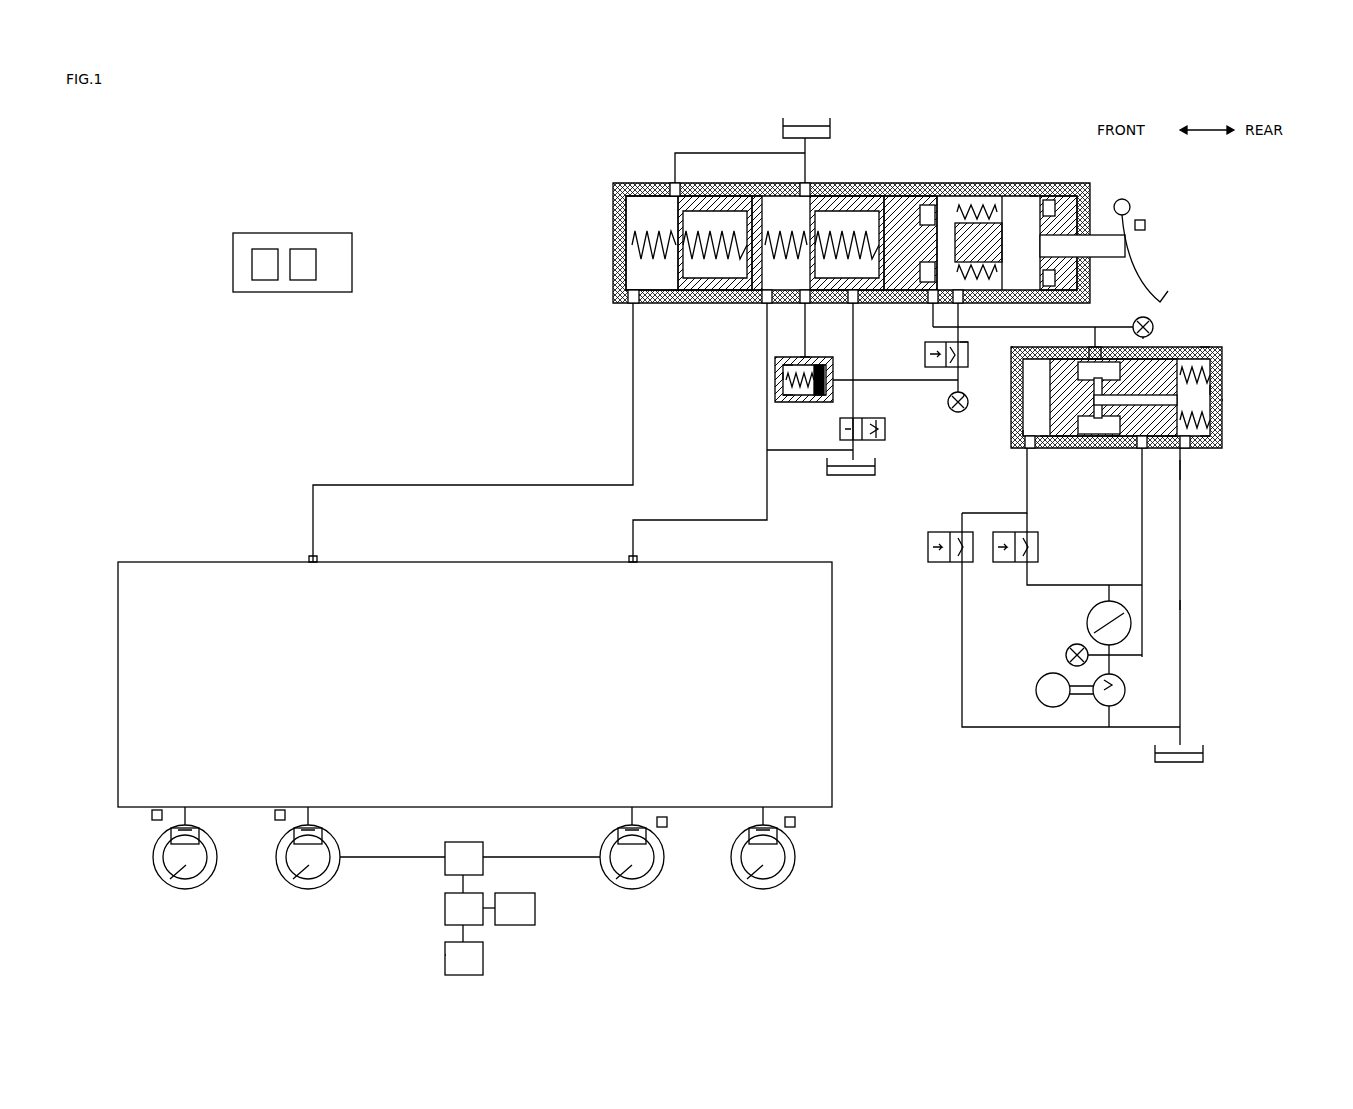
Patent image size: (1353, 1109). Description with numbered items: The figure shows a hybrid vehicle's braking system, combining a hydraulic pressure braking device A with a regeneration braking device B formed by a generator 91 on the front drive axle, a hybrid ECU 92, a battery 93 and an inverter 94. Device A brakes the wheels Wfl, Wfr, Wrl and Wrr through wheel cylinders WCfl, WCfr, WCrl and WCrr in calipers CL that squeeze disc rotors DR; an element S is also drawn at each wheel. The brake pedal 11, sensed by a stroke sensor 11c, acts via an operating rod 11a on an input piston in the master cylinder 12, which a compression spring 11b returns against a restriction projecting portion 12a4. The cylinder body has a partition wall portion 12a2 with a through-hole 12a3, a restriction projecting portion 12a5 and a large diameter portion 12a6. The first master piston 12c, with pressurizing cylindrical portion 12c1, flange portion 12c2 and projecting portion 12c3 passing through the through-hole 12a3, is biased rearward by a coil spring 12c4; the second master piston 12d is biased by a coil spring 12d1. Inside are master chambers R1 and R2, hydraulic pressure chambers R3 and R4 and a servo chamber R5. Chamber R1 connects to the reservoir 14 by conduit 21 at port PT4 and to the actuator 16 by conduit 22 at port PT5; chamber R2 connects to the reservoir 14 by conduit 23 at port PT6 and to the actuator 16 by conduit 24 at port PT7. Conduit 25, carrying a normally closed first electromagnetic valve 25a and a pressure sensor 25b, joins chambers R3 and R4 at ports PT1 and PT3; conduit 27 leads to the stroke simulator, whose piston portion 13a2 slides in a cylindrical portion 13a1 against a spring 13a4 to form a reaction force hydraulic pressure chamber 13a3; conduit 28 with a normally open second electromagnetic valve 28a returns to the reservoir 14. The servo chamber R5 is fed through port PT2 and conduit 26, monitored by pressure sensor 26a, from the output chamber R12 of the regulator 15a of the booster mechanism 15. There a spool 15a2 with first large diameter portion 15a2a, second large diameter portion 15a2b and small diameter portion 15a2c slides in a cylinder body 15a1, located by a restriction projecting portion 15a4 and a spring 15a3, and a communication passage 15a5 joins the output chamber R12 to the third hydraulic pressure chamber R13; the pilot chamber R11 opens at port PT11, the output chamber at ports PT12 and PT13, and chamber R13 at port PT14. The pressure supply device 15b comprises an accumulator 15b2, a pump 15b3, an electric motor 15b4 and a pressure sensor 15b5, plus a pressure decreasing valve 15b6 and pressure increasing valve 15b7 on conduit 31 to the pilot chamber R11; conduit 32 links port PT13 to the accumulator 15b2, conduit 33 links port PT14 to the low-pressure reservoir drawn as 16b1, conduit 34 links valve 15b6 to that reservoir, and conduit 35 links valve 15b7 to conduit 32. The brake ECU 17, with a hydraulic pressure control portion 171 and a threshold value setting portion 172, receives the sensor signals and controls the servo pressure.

The vehicle brake device A is at (439, 137).
The brake ECU / controller B is at (355, 924).
The brake pedal 11 is at (1137, 275).
The operating rod 11a is at (1130, 246).
The operating rod end 11b is at (979, 183).
The pedal stroke sensor 11c is at (1146, 226).
The master cylinder 12 is at (613, 202).
The partition wall 12a2 is at (941, 183).
The spring 12a3 is at (956, 183).
The input piston 12a4 is at (1078, 181).
The cylinder portion 12a5 is at (928, 183).
The cylinder portion 12a6 is at (872, 176).
The second master piston 12c is at (820, 303).
The piston body 12c1 is at (836, 183).
The piston portion 12c2 is at (912, 183).
The piston portion 12c3 is at (1004, 183).
The pressure port 12c4 is at (802, 357).
The first master piston 12d is at (712, 303).
The piston skirt 12d1 is at (700, 290).
The valve spring 13a1 is at (800, 386).
The valve body 13a2 is at (790, 400).
The valve housing 13a3 is at (778, 361).
The valve port 13a4 is at (786, 378).
The reservoir 14 is at (783, 128).
The servo pressure generating device 15 is at (1279, 527).
The regulator 15a is at (1223, 405).
The regulator piston 15a1 is at (1223, 421).
The regulator spring 15a2 is at (1223, 374).
The spring portion 15a2a is at (1171, 450).
The spring portion 15a2b is at (1062, 449).
The spring portion 15a2c is at (1112, 449).
The regulator housing 15a3 is at (1211, 349).
The regulator chamber 15a4 is at (1037, 449).
The regulator chamber 15a5 is at (1223, 393).
The pressure supply device 15b is at (1209, 608).
The accumulator 15b2 is at (1087, 623).
The pump 15b3 is at (1140, 681).
The motor 15b4 is at (1036, 690).
The check valve 15b5 is at (1066, 655).
The pressure reducing valve 15b6 is at (950, 562).
The pressure increasing valve 15b7 is at (1013, 562).
The actuator 16 is at (746, 562).
The reservoir 16b1 is at (1204, 753).
The brake ECU 17 is at (322, 234).
The first ECU 171 is at (265, 264).
The second ECU 172 is at (303, 264).
The conduit 21 is at (805, 161).
The conduit 22 is at (700, 520).
The conduit 23 is at (702, 153).
The conduit 24 is at (462, 485).
The pressure sensor 25 is at (948, 403).
The valve portion 25a is at (968, 352).
The sensor portion 25b is at (968, 400).
The pressure sensor 26 is at (1134, 327).
The sensor portion 26a is at (1153, 327).
The valve element 27 is at (820, 397).
The valve 28 is at (862, 422).
The valve portion 28a is at (886, 436).
The conduit 31 is at (1014, 513).
The conduit 32 is at (1142, 572).
The conduit 33 is at (1181, 666).
The conduit 34 is at (962, 642).
The conduit 35 is at (1080, 585).
The controller unit 91 is at (476, 853).
The controller unit 92 is at (530, 913).
The controller unit 93 is at (445, 956).
The controller unit 94 is at (445, 911).
The port PT1 is at (958, 309).
The port / valve PT2 is at (925, 355).
The port PT3 is at (808, 303).
The port PT4 is at (803, 186).
The port PT5 is at (766, 303).
The port PT6 is at (674, 183).
The port PT7 is at (633, 303).
The port PT11 is at (1025, 449).
The port PT12 is at (1092, 345).
The port PT13 is at (1182, 472).
The port PT14 is at (1186, 449).
The chamber R1 is at (785, 303).
The chamber R2 is at (660, 303).
The chamber R3 is at (1035, 327).
The chamber R4 is at (853, 303).
The chamber R5 is at (930, 306).
The chamber R11 is at (1012, 441).
The chamber R12 is at (1140, 449).
The chamber R13 is at (1216, 430).
The wheel speed sensor S is at (152, 816).
The caliper CL is at (172, 833).
The disc rotor DR is at (170, 866).
The right rear wheel Wrr is at (163, 880).
The left front wheel Wfl is at (290, 880).
The right front wheel Wfr is at (650, 880).
The left rear wheel Wrl is at (785, 880).
The wheel cylinder WCrr is at (163, 857).
The wheel cylinder WCfl is at (286, 857).
The wheel cylinder WCfr is at (654, 857).
The wheel cylinder WCrl is at (785, 857).